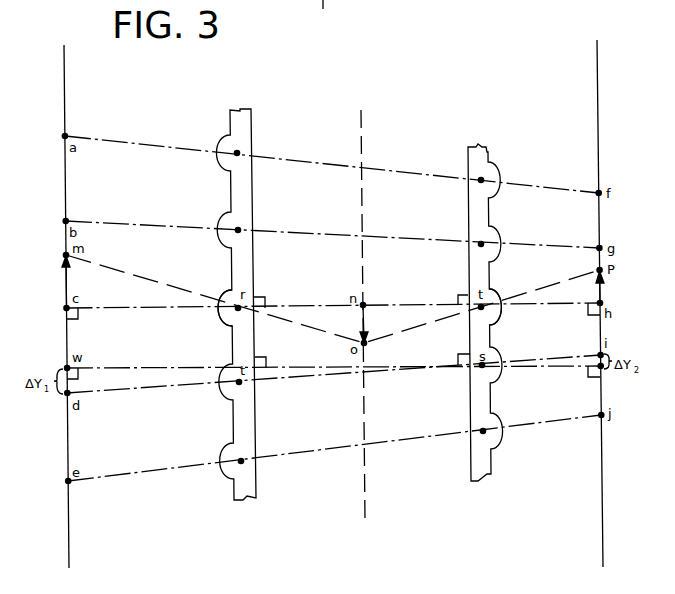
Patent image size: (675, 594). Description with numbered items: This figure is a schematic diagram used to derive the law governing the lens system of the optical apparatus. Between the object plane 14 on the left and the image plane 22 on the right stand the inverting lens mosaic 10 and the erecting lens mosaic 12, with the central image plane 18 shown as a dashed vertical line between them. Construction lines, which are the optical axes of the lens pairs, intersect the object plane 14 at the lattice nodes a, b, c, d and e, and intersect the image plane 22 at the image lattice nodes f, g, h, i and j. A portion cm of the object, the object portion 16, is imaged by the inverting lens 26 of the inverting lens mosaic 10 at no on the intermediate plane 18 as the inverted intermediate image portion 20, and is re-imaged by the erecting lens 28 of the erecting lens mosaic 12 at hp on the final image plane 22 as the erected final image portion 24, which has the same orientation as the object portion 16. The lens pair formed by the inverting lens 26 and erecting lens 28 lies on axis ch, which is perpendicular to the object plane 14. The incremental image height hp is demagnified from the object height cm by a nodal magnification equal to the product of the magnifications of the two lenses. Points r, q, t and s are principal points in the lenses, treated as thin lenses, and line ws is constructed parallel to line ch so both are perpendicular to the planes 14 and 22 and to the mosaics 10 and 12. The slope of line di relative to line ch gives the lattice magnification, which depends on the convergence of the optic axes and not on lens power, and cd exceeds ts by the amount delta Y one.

The inverting lens mosaic 10 is at (243, 109).
The erecting lens mosaic 12 is at (478, 145).
The object plane 14 is at (66, 77).
The object portion 16 is at (64, 280).
The central image plane 18 is at (362, 115).
The inverted intermediate image portion 20 is at (365, 312).
The image plane 22 is at (599, 121).
The erected final image portion 24 is at (603, 293).
The inverting lens 26 is at (229, 298).
The erecting lens 28 is at (497, 297).